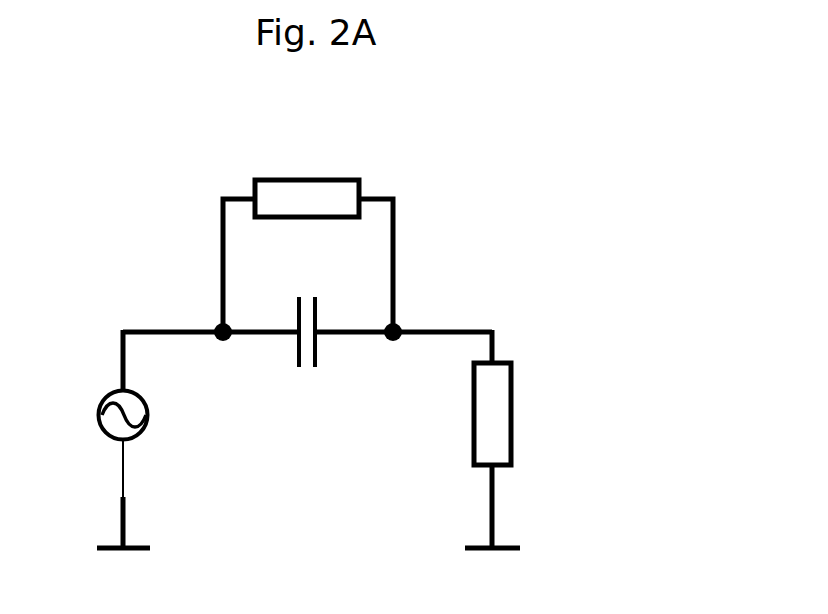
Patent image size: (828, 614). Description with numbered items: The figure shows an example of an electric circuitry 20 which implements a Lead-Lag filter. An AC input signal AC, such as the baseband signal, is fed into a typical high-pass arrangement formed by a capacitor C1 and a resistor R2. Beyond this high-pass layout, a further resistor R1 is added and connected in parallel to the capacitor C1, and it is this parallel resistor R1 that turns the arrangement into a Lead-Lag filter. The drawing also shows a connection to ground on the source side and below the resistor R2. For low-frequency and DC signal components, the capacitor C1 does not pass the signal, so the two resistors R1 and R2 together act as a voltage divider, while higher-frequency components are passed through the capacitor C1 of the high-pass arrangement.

The electric circuitry 20 is at (623, 343).
The resistor R1 is at (307, 171).
The capacitor C1 is at (309, 303).
The resistor R2 is at (463, 414).
The AC input signal AC is at (99, 415).